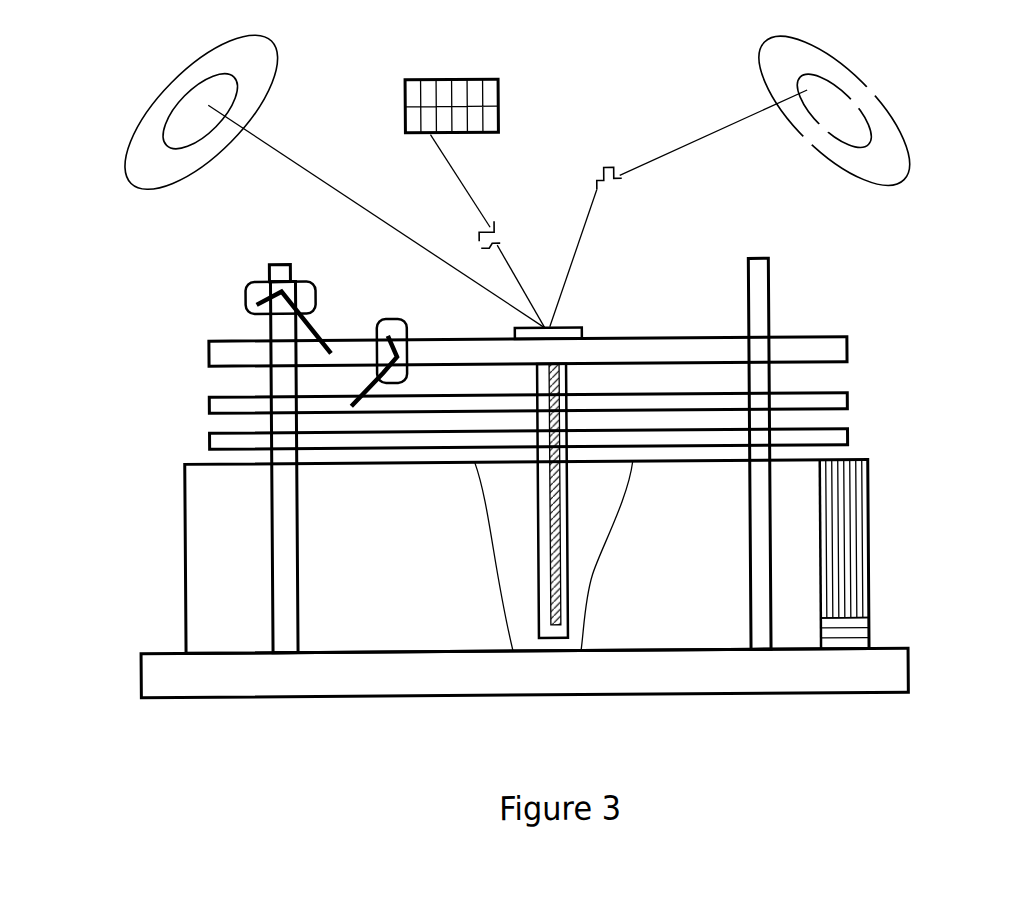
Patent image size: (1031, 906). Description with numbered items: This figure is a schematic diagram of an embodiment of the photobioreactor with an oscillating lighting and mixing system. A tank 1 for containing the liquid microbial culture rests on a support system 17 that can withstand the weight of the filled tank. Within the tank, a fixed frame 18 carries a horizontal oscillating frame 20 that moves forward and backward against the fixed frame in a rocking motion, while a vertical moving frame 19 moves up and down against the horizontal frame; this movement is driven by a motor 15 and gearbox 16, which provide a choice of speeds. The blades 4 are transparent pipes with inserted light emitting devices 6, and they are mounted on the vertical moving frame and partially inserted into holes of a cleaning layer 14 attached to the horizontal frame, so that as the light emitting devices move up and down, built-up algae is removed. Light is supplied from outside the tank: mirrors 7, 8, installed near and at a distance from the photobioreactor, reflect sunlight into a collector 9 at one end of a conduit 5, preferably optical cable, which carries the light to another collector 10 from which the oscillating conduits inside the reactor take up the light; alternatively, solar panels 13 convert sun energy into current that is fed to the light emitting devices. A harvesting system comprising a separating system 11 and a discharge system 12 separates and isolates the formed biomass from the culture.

The tank 1 is at (215, 536).
The blades 4 is at (551, 370).
The conduit 5 is at (508, 210).
The light emitting device 6 is at (585, 329).
The mirror 7 is at (899, 165).
The mirror 8 is at (150, 157).
The collector 9 is at (188, 128).
The collector 10 is at (543, 327).
The separating system 11 is at (844, 549).
The discharge system 12 is at (844, 639).
The solar panels 13 is at (463, 96).
The cleaning layer 14 is at (228, 438).
The motor 15 is at (251, 288).
The gearbox 16 is at (393, 327).
The support system 17 is at (299, 675).
The fixed frame 18 is at (286, 578).
The vertical moving frame 19 is at (229, 403).
The horizontal oscillating frame 20 is at (229, 351).